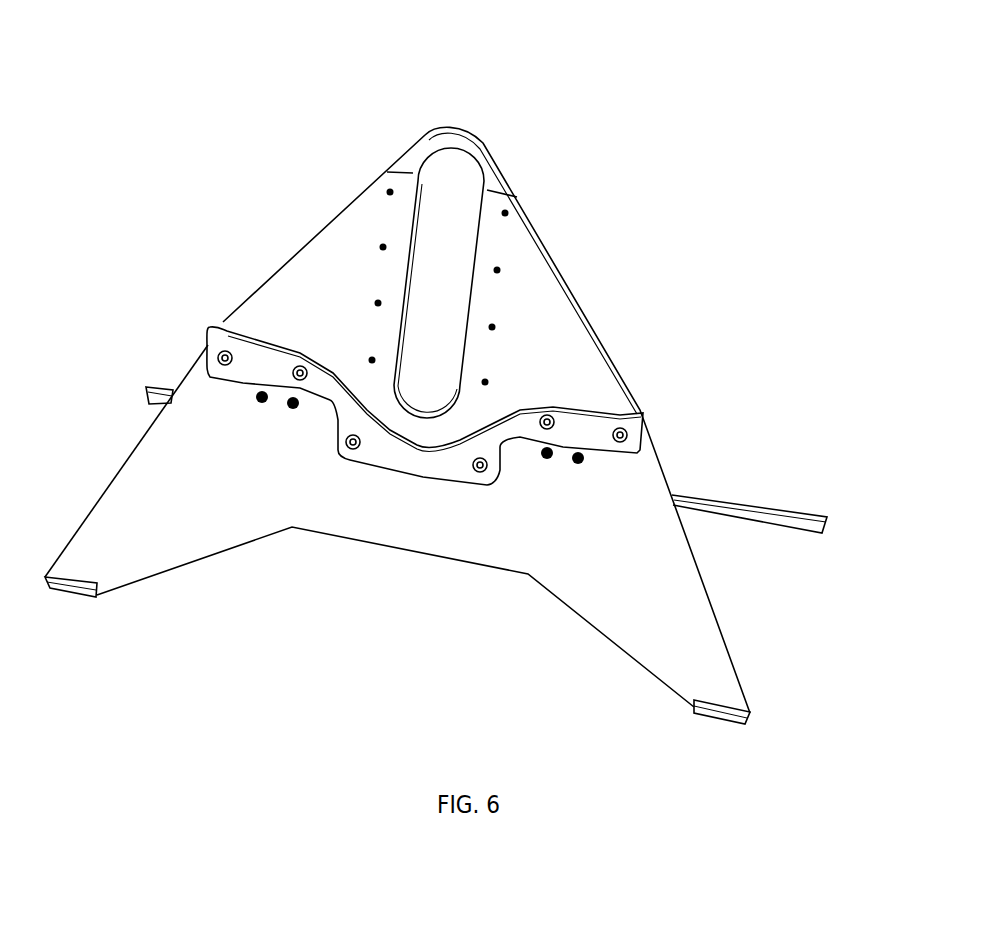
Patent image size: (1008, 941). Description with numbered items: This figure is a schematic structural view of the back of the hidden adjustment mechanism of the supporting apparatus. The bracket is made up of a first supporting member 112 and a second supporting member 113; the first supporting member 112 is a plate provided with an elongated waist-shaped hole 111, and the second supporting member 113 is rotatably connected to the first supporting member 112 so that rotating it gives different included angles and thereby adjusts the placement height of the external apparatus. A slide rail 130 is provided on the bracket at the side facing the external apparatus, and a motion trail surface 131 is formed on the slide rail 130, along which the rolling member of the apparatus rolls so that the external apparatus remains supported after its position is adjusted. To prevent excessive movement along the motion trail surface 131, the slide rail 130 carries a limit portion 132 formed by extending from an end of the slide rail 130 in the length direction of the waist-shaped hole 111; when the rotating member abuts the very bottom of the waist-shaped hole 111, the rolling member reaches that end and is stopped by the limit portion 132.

The waist-shaped hole 111 is at (448, 177).
The first supporting member 112 is at (530, 283).
The second supporting member 113 is at (735, 507).
The slide rail 130 is at (440, 463).
The motion trail surface 131 is at (570, 407).
The limit portion 132 is at (633, 410).